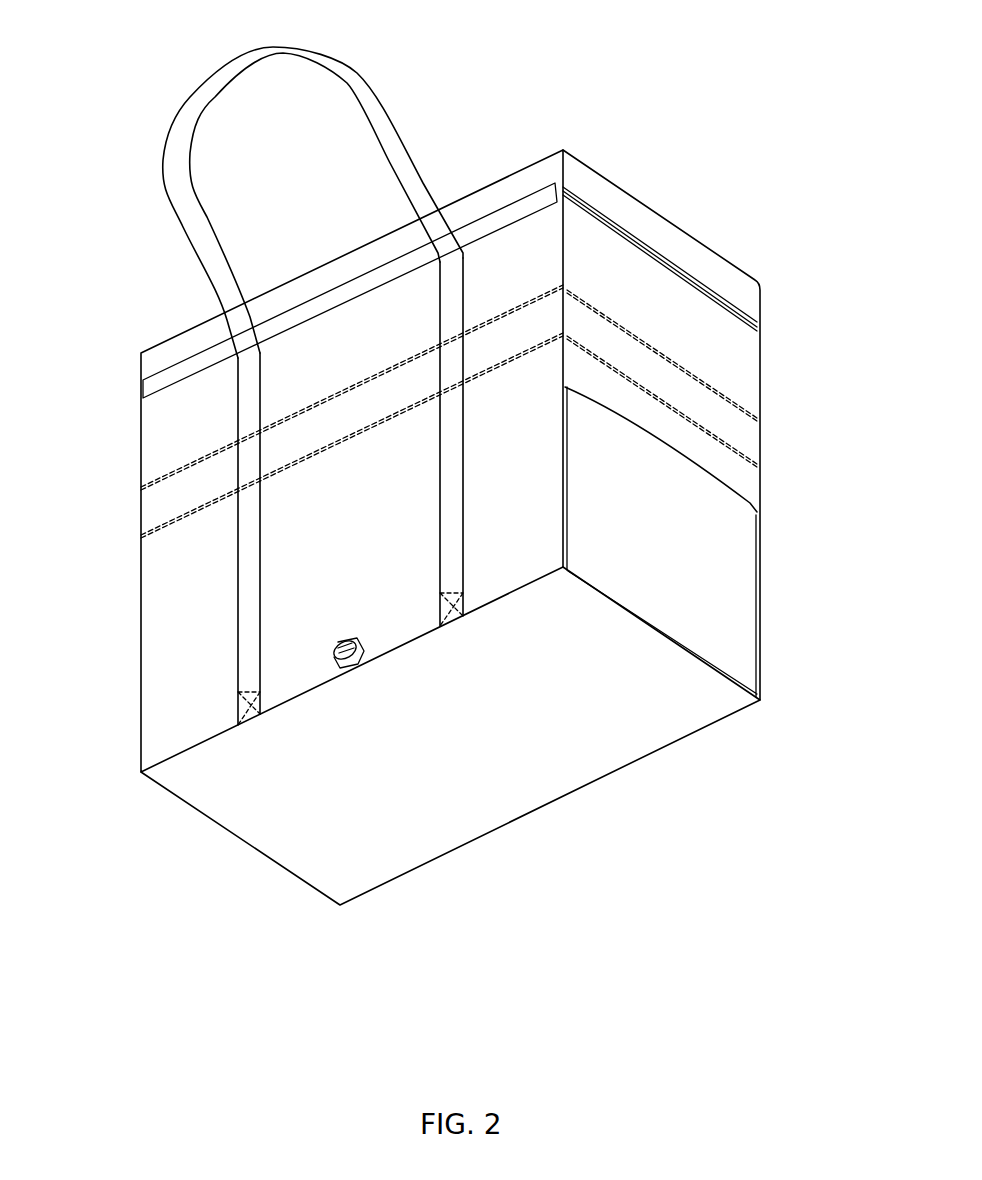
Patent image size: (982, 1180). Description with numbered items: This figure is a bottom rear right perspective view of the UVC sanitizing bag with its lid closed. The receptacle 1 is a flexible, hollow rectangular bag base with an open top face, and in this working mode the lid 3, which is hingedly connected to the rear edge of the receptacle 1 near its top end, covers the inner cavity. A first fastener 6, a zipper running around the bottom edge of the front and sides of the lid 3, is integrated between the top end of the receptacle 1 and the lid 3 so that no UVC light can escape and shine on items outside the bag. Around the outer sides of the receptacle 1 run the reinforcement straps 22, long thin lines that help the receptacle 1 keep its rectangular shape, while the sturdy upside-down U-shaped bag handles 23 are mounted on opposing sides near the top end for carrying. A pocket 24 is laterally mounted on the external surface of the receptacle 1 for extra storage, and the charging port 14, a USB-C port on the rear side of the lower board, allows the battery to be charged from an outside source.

The receptacle 1 is at (152, 658).
The lid 3 is at (753, 302).
The first fastener 6 is at (760, 327).
The charging port 14 is at (336, 641).
The reinforcement straps 22 is at (140, 538).
The bag handles 23 is at (357, 82).
The pockets 24 is at (750, 503).